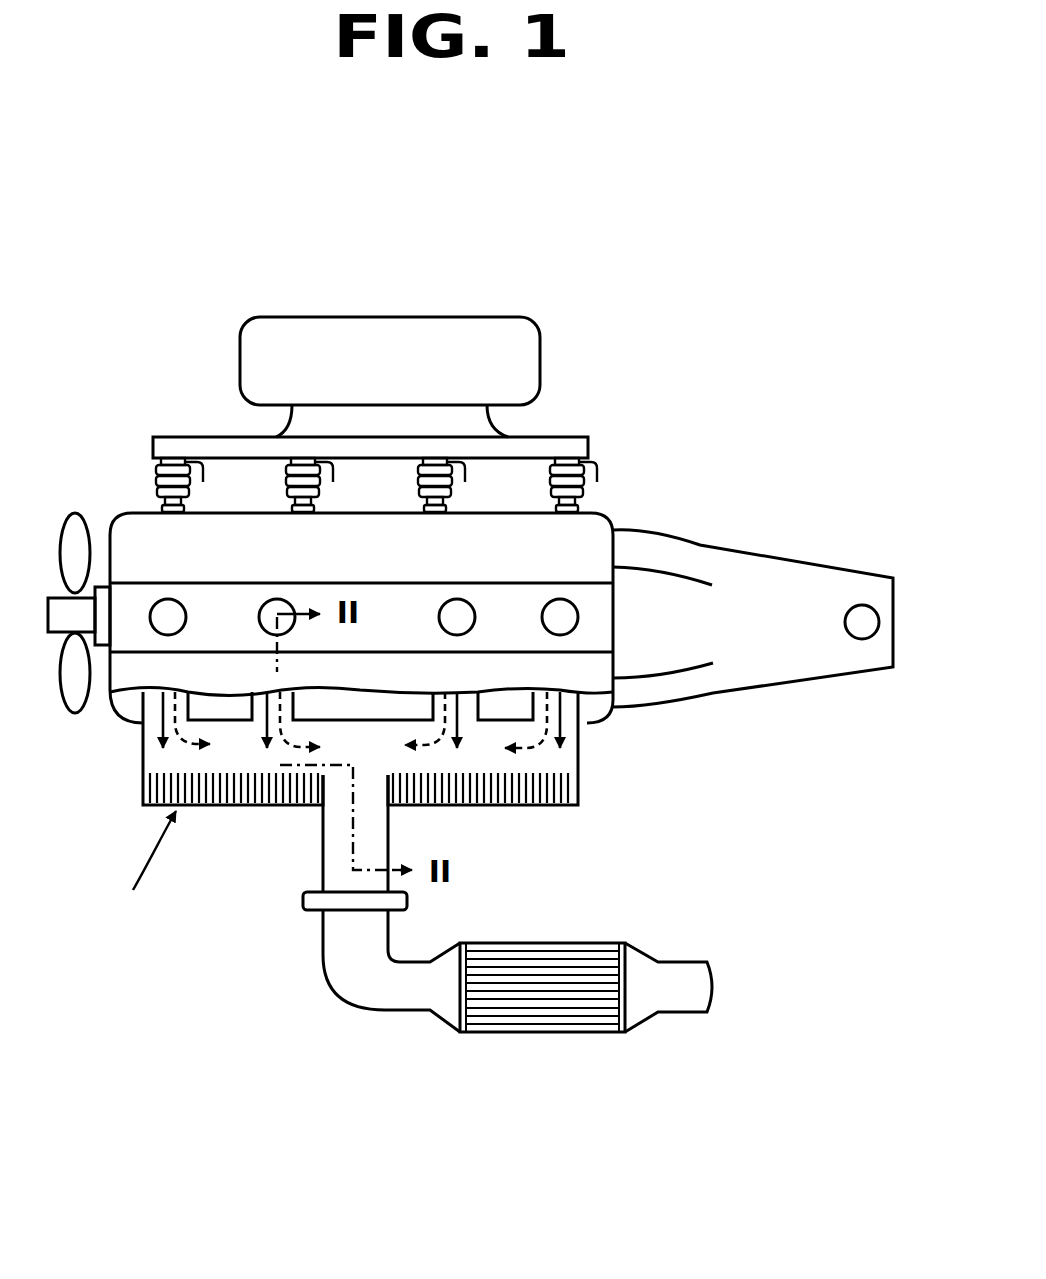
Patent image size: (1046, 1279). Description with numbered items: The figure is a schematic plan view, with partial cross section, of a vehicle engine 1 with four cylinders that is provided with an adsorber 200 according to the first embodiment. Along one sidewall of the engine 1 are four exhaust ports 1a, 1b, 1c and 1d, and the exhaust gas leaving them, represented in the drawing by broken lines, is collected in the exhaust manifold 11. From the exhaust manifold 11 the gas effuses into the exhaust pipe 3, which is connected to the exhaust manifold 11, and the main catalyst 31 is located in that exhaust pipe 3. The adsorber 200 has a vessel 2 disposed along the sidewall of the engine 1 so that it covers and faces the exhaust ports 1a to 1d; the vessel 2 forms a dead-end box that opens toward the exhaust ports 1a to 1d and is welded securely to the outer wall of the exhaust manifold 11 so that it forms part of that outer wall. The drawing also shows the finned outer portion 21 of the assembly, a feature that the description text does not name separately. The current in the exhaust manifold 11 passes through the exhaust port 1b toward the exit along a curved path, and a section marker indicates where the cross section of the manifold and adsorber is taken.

The engine 1 is at (585, 545).
The exhaust port 1a is at (153, 720).
The exhaust port 1b is at (262, 705).
The exhaust port 1c is at (465, 707).
The exhaust port 1d is at (585, 725).
The vessel 2 is at (462, 795).
The cooling fins 21 is at (583, 787).
The adsorber 200 is at (125, 871).
The exhaust manifold 11 is at (345, 778).
The exhaust pipe 3 is at (398, 985).
The main catalyst 31 is at (548, 995).